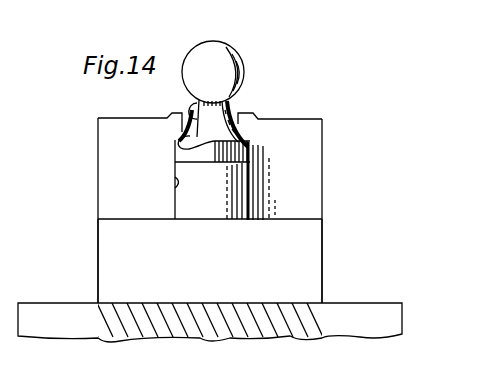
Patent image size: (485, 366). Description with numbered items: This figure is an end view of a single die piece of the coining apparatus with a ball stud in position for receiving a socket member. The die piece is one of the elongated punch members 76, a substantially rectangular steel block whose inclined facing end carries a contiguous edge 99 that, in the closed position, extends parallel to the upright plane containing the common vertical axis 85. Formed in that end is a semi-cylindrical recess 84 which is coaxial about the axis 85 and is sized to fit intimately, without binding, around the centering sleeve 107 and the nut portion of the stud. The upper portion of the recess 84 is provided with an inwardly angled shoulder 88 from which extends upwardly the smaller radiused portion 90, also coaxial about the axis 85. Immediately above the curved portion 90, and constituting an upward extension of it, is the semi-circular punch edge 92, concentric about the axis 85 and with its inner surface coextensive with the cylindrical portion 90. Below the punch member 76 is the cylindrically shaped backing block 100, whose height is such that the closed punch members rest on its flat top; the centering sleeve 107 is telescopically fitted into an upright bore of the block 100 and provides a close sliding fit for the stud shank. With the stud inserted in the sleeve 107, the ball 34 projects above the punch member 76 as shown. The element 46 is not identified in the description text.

The ball 34 is at (232, 54).
The smaller radiused portion 90 is at (195, 105).
The punch edge 92 is at (240, 117).
The common vertical axis 85 is at (254, 145).
The contiguous edge 99 is at (107, 147).
The inwardly angled shoulder 88 is at (178, 142).
The semi-cylindrical recess 84 is at (174, 183).
The centering sleeve 107 is at (222, 195).
The punch member 76 is at (318, 165).
The backing block 100 is at (322, 264).
The mounting plate 46 is at (148, 355).